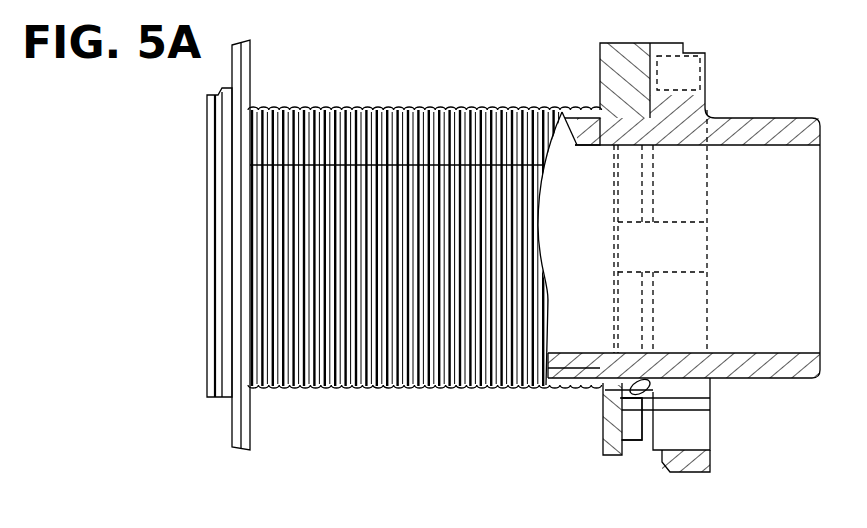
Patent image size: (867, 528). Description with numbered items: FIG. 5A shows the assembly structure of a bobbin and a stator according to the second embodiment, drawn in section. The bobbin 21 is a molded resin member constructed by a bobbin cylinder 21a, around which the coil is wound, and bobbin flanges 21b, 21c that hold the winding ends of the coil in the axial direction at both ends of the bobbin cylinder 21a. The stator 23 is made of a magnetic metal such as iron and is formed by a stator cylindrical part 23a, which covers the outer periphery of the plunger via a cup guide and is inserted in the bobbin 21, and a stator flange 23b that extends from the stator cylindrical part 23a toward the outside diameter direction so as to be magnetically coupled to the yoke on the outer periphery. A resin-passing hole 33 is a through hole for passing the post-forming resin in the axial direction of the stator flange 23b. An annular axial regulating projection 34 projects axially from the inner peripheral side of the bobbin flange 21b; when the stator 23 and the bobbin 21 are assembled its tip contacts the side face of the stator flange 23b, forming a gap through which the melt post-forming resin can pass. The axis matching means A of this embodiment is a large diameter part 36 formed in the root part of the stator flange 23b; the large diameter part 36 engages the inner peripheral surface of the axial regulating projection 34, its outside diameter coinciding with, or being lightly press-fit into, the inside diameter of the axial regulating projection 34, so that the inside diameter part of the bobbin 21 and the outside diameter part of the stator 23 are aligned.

The bobbin 21 is at (424, 271).
The bobbin cylinder 21a is at (437, 390).
The bobbin flange 21b is at (612, 440).
The bobbin flange 21c is at (248, 430).
The stator 23 is at (684, 285).
The stator cylindrical part 23a is at (573, 362).
The stator flange 23b is at (697, 466).
The resin-passing hole 33 is at (700, 432).
The axial regulating projection 34 is at (708, 410).
The large diameter part 36 is at (712, 388).
The axis matching means A is at (628, 383).